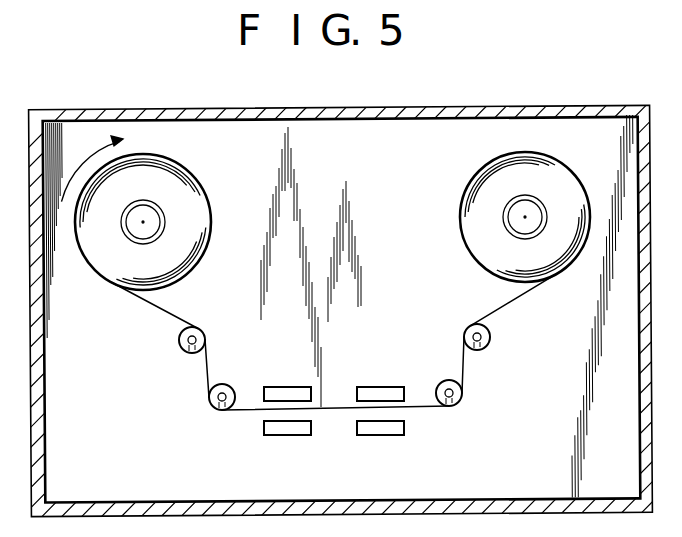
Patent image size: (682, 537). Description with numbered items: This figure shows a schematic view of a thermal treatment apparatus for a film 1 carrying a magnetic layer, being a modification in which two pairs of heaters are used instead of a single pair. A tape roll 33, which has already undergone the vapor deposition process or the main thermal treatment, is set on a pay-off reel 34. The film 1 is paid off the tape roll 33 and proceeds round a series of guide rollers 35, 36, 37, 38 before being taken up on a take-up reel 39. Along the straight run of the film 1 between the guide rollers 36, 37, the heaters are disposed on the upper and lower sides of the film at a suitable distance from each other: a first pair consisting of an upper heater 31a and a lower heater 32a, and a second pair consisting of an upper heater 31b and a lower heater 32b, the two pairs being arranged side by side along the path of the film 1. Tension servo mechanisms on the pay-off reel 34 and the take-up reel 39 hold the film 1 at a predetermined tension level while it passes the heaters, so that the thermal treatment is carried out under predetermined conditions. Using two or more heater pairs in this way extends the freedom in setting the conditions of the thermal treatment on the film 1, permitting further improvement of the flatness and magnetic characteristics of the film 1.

The film 1 is at (519, 297).
The heater 31a is at (380, 387).
The heater 31b is at (286, 387).
The heater 32a is at (380, 428).
The heater 32b is at (288, 428).
The tape roll 33 is at (461, 232).
The pay-off reel 34 is at (527, 205).
The guide roller 35 is at (490, 338).
The guide roller 36 is at (460, 402).
The guide roller 37 is at (210, 400).
The guide roller 38 is at (181, 344).
The take-up reel 39 is at (150, 210).